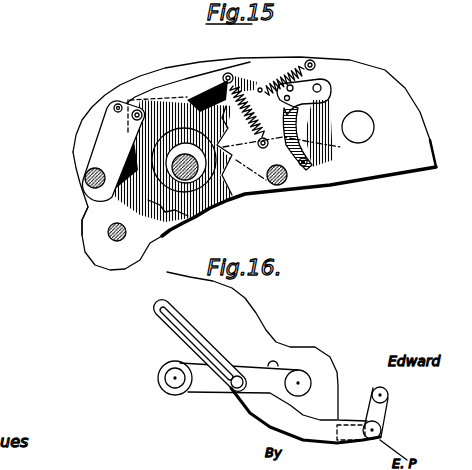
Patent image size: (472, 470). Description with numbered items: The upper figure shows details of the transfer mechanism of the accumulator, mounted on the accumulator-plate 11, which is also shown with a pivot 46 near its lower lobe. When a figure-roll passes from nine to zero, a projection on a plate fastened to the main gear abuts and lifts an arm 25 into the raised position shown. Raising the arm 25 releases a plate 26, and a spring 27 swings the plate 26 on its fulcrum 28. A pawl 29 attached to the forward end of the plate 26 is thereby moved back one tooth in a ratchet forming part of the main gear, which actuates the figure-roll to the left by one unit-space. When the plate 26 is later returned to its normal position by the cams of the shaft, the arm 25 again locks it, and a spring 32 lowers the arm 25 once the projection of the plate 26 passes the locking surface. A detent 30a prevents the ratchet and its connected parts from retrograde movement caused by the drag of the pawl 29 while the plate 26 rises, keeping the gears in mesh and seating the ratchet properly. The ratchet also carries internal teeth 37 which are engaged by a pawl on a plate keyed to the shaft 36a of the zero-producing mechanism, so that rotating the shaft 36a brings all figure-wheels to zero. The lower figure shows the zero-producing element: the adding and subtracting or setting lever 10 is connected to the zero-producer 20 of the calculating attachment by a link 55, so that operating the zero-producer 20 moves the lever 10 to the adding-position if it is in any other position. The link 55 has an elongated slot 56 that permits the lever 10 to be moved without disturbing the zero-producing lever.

In FIG. 16, the setting lever 10 is at (378, 390).
In FIG. 15, the accumulator-plate 11 is at (81, 231).
In FIG. 16, the zero-producer 20 is at (189, 392).
In FIG. 15, the arm 25 is at (155, 87).
In FIG. 15, the plate 26 is at (315, 151).
In FIG. 15, the spring 27 is at (291, 68).
In FIG. 15, the fulcrum 28 is at (296, 193).
In FIG. 15, the pawl 29 is at (130, 152).
In FIG. 15, the detent 30a is at (322, 180).
In FIG. 15, the spring 32 is at (229, 73).
In FIG. 15, the shaft 36a is at (180, 160).
In FIG. 15, the internal teeth 37 is at (193, 226).
In FIG. 15, the pivot 46 is at (110, 238).
In FIG. 16, the link 55 is at (246, 406).
In FIG. 16, the elongated slot 56 is at (188, 331).